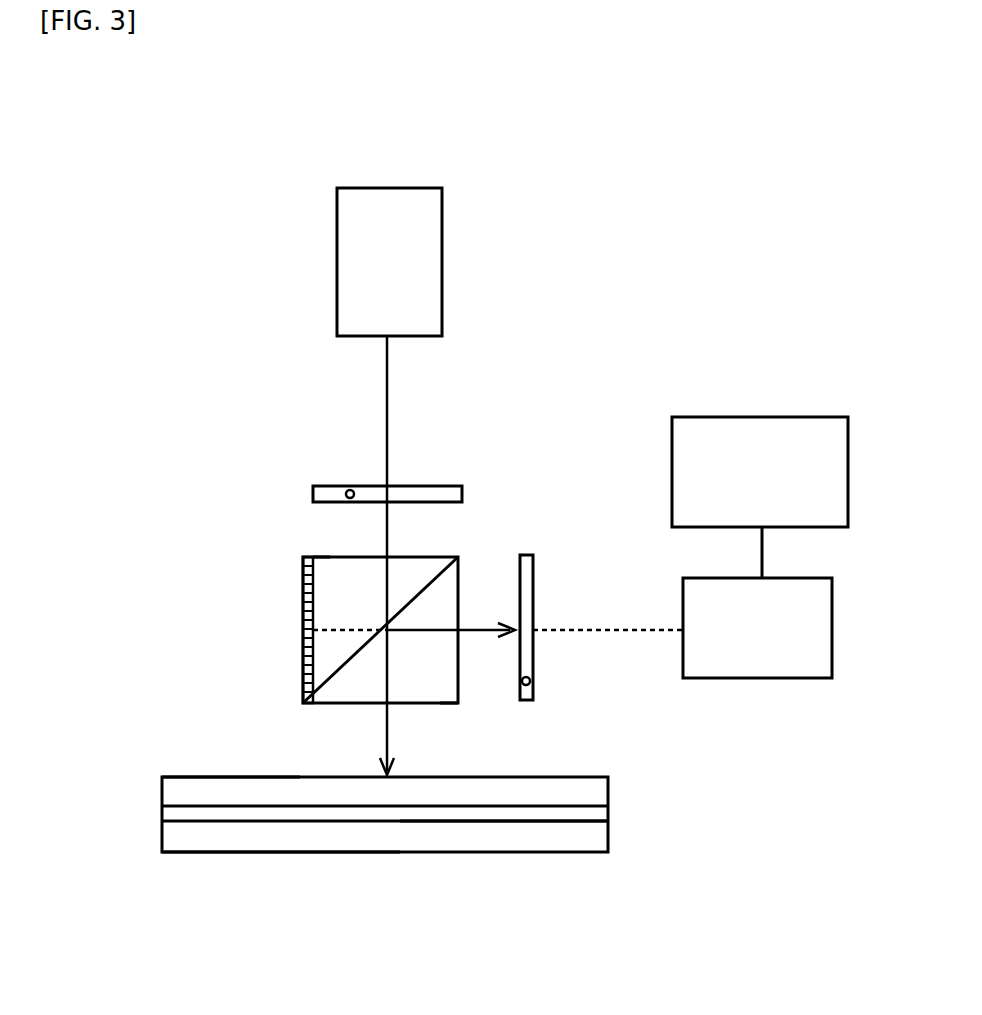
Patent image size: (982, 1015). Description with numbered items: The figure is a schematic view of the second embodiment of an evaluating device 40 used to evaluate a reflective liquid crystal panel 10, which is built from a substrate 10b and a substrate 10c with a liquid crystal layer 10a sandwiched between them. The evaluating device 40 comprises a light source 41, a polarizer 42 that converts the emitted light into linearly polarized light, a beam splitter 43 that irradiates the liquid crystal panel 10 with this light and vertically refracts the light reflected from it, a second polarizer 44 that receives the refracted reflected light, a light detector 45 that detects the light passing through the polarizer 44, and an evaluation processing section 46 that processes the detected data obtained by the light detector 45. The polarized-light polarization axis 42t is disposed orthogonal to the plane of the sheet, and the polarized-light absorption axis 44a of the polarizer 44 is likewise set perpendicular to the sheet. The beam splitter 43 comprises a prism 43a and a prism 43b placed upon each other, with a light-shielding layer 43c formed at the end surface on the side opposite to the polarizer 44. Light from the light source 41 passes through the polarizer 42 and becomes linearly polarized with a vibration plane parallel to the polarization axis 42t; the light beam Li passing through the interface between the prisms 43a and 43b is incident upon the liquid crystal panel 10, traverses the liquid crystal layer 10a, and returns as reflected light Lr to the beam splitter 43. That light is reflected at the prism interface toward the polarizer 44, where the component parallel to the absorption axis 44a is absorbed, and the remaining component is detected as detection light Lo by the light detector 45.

The evaluating device 40 is at (143, 168).
The light source 41 is at (350, 262).
The polarizer 42 is at (313, 494).
The polarized-light polarization axis 42t is at (350, 490).
The beam splitter 43 is at (298, 608).
The prism 43a is at (333, 570).
The prism 43b is at (452, 690).
The light-shielding layer 43c is at (300, 664).
The polarizer 44 is at (526, 555).
The polarized-light absorption axis 44a is at (530, 681).
The light detector 45 is at (773, 672).
The evaluation processing section 46 is at (776, 430).
The liquid crystal panel 10 is at (226, 855).
The liquid crystal layer 10a is at (483, 815).
The substrate 10b is at (187, 790).
The substrate 10c is at (313, 845).
The light beam Li is at (384, 741).
The reflected light Lr is at (390, 677).
The detection light Lo is at (607, 630).